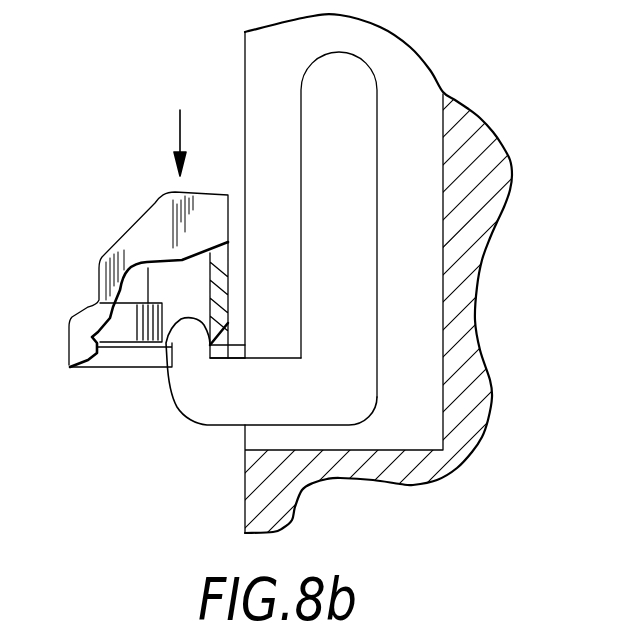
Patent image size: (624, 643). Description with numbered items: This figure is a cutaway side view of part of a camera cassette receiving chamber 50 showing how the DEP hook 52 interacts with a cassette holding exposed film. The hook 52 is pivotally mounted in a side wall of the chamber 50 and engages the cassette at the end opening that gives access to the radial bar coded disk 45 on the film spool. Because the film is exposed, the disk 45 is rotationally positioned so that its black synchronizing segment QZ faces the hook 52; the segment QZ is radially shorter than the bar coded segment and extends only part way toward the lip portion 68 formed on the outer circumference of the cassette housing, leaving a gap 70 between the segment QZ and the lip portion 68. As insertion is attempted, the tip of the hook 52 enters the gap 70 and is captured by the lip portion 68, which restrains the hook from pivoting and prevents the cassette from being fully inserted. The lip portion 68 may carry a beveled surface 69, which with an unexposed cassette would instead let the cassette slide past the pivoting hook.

The camera cassette receiving chamber 50 is at (245, 52).
The DEP hook 52 is at (378, 208).
The lip portion 68 is at (229, 314).
The beveled surface 69 is at (232, 336).
The disk 45 is at (128, 322).
The gap 70 is at (189, 292).
The synchronizing segment QZ is at (148, 300).